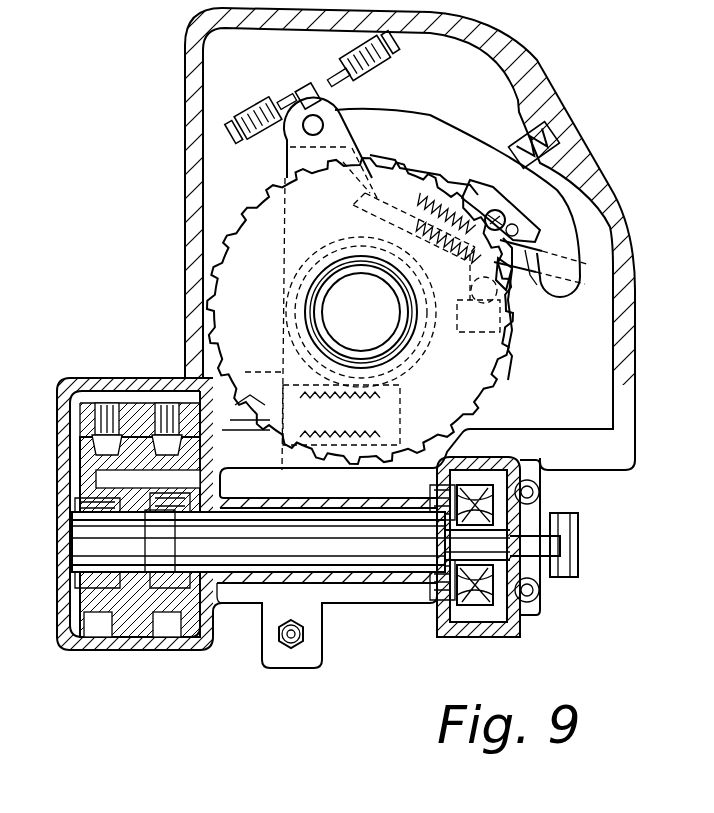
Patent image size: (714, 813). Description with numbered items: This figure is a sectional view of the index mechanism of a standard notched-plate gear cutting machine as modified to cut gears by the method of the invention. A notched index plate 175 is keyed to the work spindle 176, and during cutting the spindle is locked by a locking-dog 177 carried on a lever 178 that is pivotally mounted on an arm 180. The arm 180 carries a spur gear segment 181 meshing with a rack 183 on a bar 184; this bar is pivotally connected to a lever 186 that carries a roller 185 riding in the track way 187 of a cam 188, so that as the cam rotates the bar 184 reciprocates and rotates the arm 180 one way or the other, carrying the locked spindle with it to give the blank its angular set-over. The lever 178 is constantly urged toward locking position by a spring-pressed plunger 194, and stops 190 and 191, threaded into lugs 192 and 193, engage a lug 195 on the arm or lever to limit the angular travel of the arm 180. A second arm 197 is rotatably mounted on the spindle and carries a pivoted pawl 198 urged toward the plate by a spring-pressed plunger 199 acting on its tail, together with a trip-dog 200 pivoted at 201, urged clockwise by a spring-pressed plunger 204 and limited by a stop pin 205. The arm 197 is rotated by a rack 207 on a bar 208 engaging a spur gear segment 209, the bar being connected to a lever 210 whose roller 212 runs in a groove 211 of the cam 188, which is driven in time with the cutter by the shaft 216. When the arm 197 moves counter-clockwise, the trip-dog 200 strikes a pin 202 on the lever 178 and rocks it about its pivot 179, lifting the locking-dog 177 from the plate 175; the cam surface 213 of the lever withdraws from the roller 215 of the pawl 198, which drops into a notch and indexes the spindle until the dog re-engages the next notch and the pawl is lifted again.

The notched index plate 175 is at (495, 386).
The work spindle 176 is at (345, 303).
The locking-dog 177 is at (432, 182).
The lever 178 is at (447, 128).
The pivot 179 is at (320, 122).
The arm 180 is at (293, 152).
The spur gear segment 181 is at (282, 366).
The rack 183 is at (372, 418).
The bar 184 is at (238, 417).
The roller 185 is at (108, 410).
The lever 186 is at (80, 417).
The track way 187 is at (97, 640).
The cam 188 is at (134, 640).
The stop 190 is at (283, 97).
The stop 191 is at (345, 80).
The lug 192 is at (250, 110).
The lug 193 is at (362, 58).
The spring-pressed plunger 194 is at (543, 147).
The lug 195 is at (305, 85).
The arm 197 is at (468, 322).
The pawl 198 is at (482, 200).
The spring-pressed plunger 199 is at (462, 232).
The trip-dog 200 is at (514, 343).
The pivot 201 is at (505, 285).
The pin 202 is at (528, 272).
The spring-pressed plunger 204 is at (520, 232).
The stop pin 205 is at (480, 302).
The rack 207 is at (400, 442).
The bar 208 is at (240, 420).
The spur gear segment 209 is at (402, 424).
The lever 210 is at (262, 422).
The groove 211 is at (168, 645).
The roller 212 is at (166, 410).
The cam surface 213 is at (500, 232).
The roller 215 is at (538, 249).
The shaft 216 is at (348, 548).